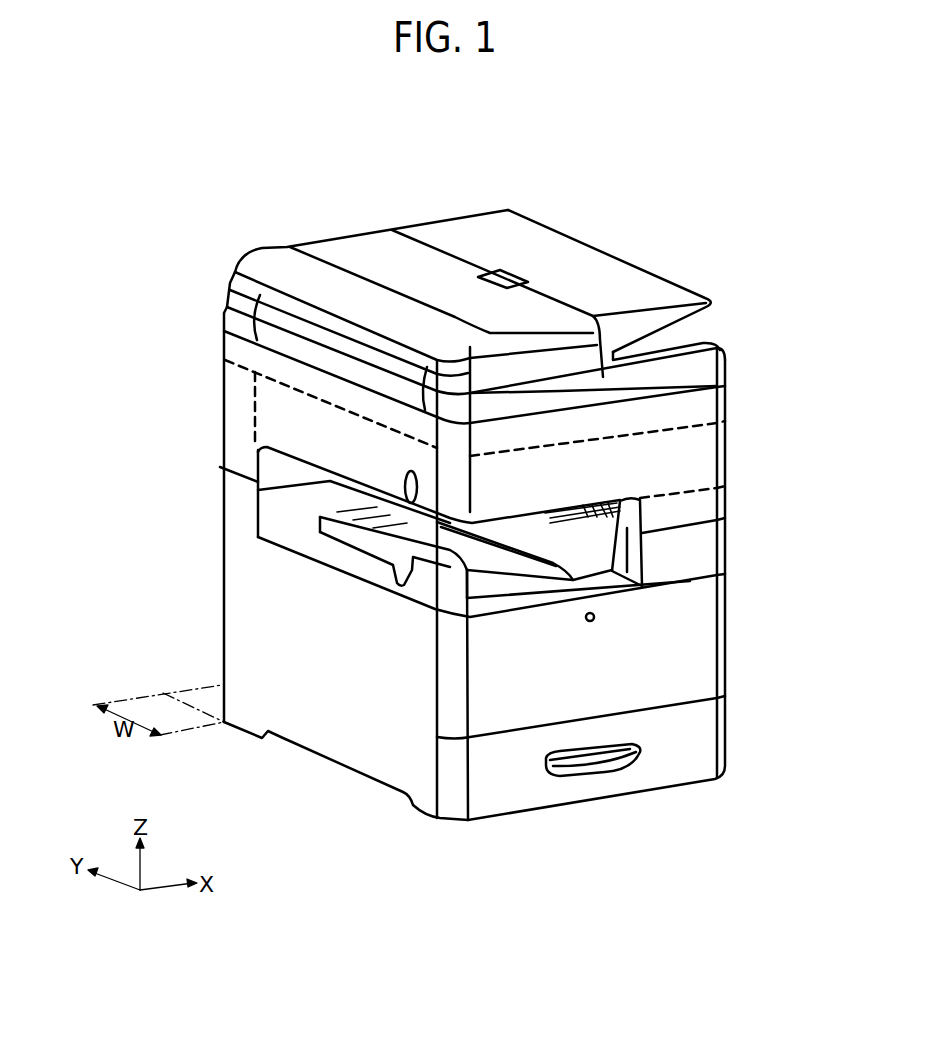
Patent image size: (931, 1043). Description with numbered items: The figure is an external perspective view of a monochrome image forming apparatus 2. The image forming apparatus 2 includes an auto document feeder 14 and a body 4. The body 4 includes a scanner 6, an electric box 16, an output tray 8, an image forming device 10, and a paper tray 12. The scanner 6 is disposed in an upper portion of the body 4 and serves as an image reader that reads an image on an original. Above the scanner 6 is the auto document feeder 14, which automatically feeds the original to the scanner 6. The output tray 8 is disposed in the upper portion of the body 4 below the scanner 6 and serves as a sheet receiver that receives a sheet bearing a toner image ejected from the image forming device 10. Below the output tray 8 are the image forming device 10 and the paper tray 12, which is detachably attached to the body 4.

The image forming apparatus 2 is at (689, 189).
The body 4 is at (792, 385).
The scanner 6 is at (707, 405).
The output tray 8 is at (440, 557).
The image forming device 10 is at (707, 633).
The paper tray 12 is at (707, 742).
The auto document feeder (ADF) 14 is at (347, 233).
The electric box 16 is at (707, 453).